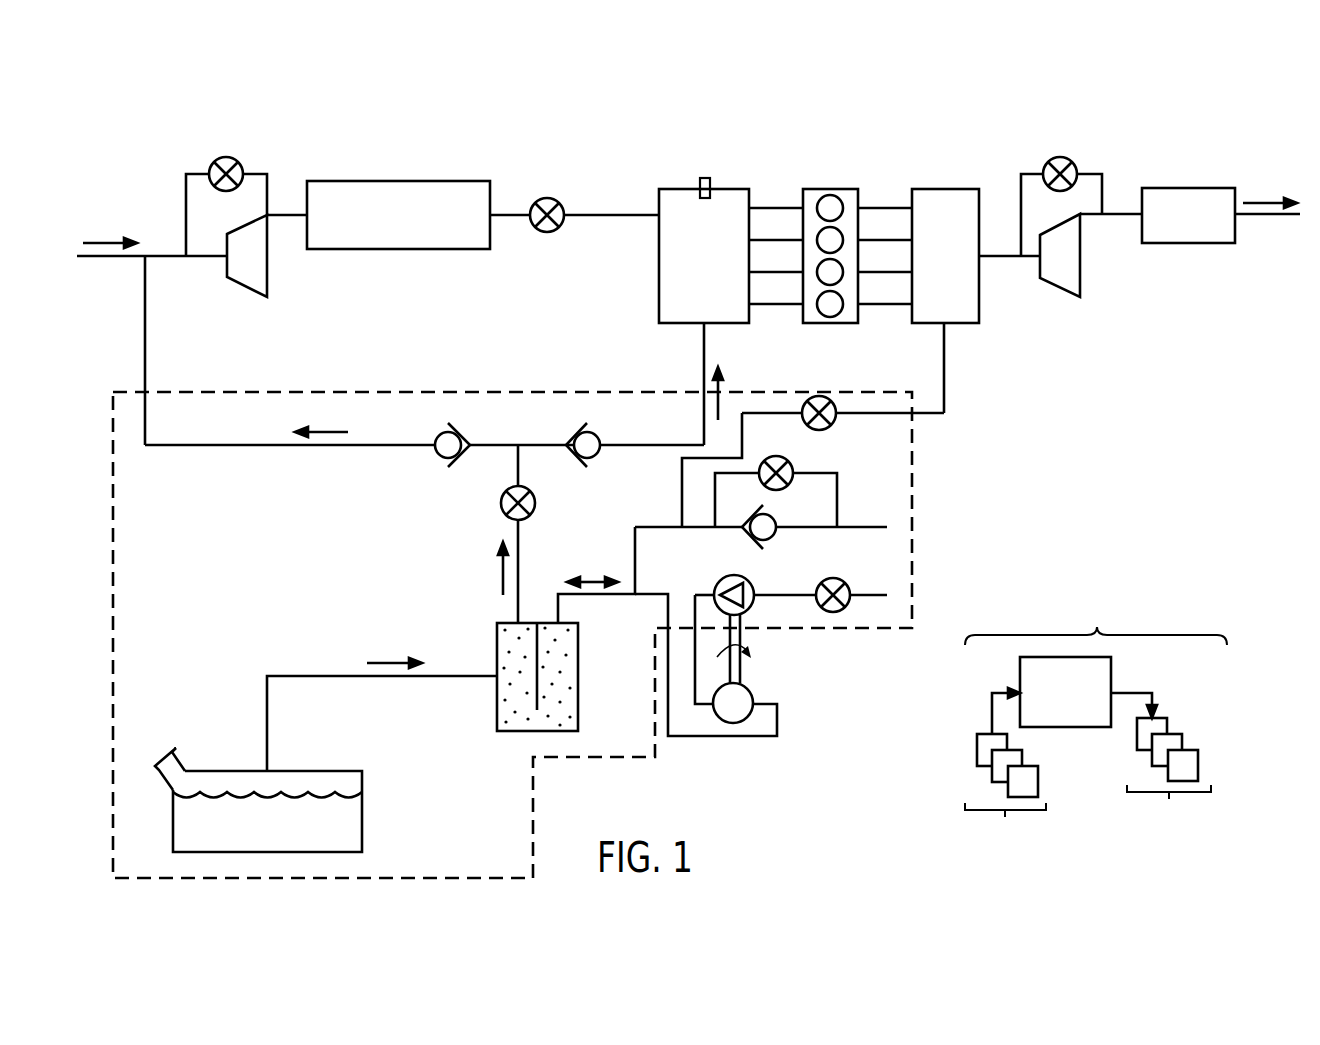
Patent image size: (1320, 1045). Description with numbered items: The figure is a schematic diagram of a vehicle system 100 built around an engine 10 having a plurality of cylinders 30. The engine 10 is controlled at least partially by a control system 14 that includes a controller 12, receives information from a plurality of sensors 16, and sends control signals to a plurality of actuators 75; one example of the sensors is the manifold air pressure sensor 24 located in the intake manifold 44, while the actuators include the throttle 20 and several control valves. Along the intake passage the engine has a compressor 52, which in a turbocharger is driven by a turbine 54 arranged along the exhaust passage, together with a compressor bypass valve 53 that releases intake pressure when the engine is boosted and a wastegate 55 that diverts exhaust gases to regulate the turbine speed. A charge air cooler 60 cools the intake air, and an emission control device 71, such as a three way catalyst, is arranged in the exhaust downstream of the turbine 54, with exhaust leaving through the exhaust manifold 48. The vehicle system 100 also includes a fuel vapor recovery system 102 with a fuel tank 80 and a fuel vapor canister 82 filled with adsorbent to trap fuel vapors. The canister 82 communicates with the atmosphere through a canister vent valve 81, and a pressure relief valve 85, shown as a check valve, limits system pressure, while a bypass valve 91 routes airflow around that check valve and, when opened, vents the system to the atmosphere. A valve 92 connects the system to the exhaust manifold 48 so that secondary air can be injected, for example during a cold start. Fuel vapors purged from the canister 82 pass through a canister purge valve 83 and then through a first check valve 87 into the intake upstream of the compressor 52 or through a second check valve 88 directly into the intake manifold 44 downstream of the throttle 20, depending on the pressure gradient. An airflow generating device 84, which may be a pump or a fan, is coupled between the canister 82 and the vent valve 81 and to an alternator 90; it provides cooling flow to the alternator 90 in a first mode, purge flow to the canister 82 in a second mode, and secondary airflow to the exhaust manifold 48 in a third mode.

The vehicle system 100 is at (919, 113).
The engine 10 is at (858, 189).
The controller 12 is at (1055, 707).
The control system 14 is at (1094, 721).
The sensors 16 is at (1005, 775).
The throttle 20 is at (559, 203).
The manifold air pressure (MAP) sensor 24 is at (711, 178).
The cylinders 30 is at (828, 195).
The intake manifold 44 is at (694, 266).
The exhaust manifold 48 is at (936, 266).
The compressor 52 is at (237, 266).
The compressor bypass valve (CBV) 53 is at (236, 160).
The turbine 54 is at (1050, 266).
The wastegate 55 is at (1071, 161).
The charge air cooler (CAC) 60 is at (388, 225).
The emission control device 71 is at (1178, 224).
The actuators 75 is at (1168, 768).
The fuel tank 80 is at (362, 813).
The canister vent valve (CVV) 81 is at (845, 582).
The fuel vapor canister 82 is at (578, 669).
The canister purge valve (CPV) 83 is at (536, 497).
The airflow generating device 84 is at (750, 582).
The pressure relief valve 85 is at (773, 514).
The first check valve 87 is at (443, 433).
The second check valve 88 is at (591, 433).
The alternator 90 is at (752, 691).
The bypass valve 91 is at (792, 462).
The valve 92 is at (835, 425).
The fuel vapor recovery system 102 is at (913, 453).